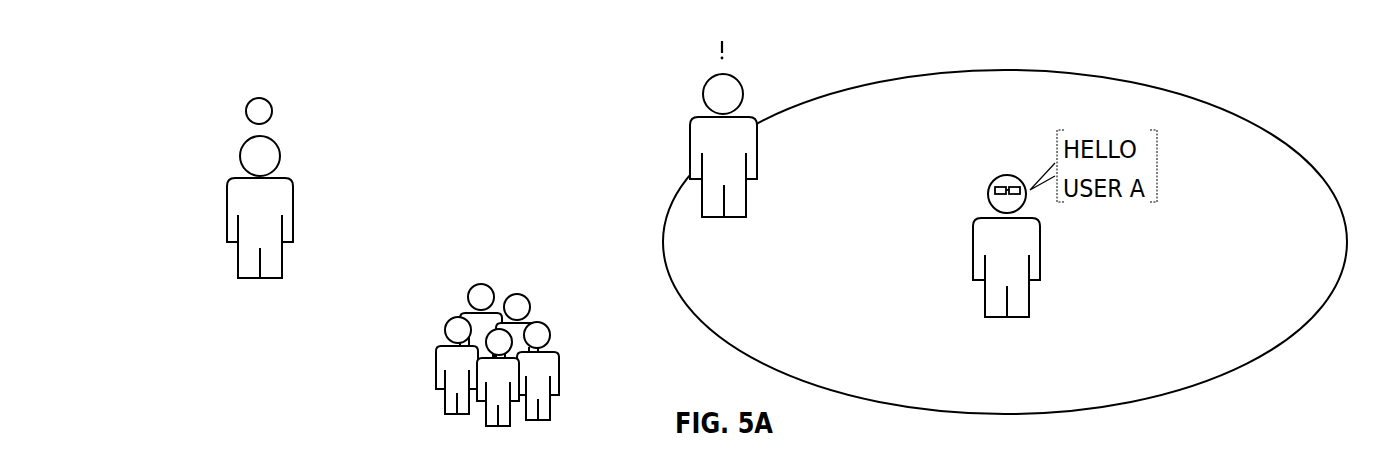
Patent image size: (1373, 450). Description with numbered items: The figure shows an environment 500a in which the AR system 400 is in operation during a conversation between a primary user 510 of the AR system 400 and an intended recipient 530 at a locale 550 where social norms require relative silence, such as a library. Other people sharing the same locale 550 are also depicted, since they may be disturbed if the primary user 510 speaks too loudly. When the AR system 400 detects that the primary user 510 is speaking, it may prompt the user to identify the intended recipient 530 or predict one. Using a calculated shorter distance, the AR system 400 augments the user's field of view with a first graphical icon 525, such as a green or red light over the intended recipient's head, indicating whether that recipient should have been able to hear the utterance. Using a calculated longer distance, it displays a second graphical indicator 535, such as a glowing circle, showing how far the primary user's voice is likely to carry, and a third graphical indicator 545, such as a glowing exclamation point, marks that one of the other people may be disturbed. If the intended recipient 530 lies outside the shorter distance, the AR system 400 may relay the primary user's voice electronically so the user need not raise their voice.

The environment 500a is at (476, 89).
The AR system 400 is at (988, 190).
The primary user 510 is at (1033, 240).
The first graphical icon 525 is at (246, 108).
The intended recipient 530 is at (280, 202).
The second graphical indicator 535 is at (1262, 123).
The third graphical indicator 545 is at (738, 48).
The locale 550 is at (452, 318).